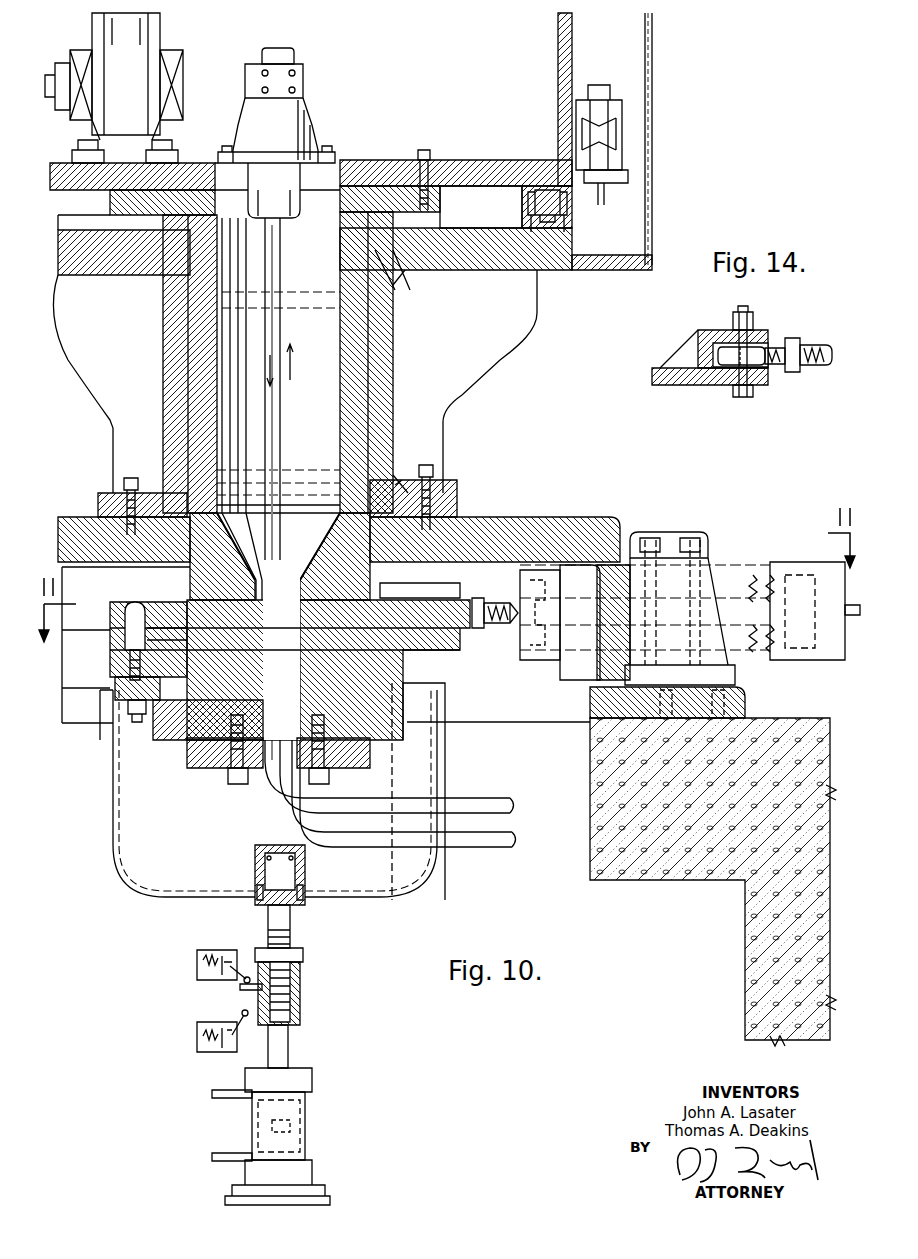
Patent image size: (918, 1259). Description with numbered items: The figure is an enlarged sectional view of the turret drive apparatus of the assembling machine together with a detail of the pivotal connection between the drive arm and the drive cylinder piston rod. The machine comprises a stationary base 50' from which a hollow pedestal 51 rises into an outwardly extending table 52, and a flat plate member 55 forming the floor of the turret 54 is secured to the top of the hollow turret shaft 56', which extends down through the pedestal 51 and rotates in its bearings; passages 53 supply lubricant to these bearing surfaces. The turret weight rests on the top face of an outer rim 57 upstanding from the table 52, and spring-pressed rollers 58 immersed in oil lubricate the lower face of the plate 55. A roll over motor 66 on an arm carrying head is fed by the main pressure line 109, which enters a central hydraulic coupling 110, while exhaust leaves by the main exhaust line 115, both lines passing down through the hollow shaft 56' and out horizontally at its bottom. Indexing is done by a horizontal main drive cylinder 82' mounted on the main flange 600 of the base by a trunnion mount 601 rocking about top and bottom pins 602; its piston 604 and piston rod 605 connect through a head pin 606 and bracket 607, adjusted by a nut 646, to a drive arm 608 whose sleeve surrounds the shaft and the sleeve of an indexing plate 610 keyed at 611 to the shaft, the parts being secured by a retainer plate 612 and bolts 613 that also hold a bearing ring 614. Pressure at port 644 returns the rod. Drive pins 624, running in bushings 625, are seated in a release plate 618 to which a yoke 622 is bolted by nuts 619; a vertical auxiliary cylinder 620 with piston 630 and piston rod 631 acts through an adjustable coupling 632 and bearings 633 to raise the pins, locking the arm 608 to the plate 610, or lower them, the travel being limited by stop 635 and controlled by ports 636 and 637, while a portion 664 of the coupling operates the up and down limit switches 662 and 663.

In FIG. 10, the roll over motor 66 is at (136, 93).
In FIG. 10, the central hydraulic coupling 110 is at (305, 102).
In FIG. 10, the flat plate member 55 is at (398, 163).
In FIG. 10, the table 52 is at (443, 270).
In FIG. 10, the turret 54 is at (655, 103).
In FIG. 10, the rollers 58 is at (548, 188).
In FIG. 10, the outer rim 57 is at (525, 205).
In FIG. 10, the hollow turret shaft 56' is at (192, 407).
In FIG. 10, the hollow pedestal 51 is at (394, 360).
In FIG. 10, the passages 53 is at (398, 283).
In FIG. 10, the stationary base 50' is at (339, 513).
In FIG. 10, the main pressure line 109 is at (294, 388).
In FIG. 10, the main exhaust line 115 is at (258, 372).
In FIG. 10, the indexing plate 610 is at (100, 618).
In FIG. 10, the drive arm 608 is at (110, 635).
In FIG. 14, the drive arm 608 is at (652, 378).
In FIG. 10, the drive pins 624 is at (135, 604).
In FIG. 10, the bushings 625 is at (150, 635).
In FIG. 10, the release plate 618 is at (115, 706).
In FIG. 10, the nuts 619 is at (137, 722).
In FIG. 10, the bearing ring 614 is at (200, 742).
In FIG. 10, the key 611 is at (210, 755).
In FIG. 10, the retainer plate 612 is at (338, 770).
In FIG. 10, the bolts 613 is at (238, 784).
In FIG. 10, the nut 646 is at (476, 598).
In FIG. 14, the nut 646 is at (790, 372).
In FIG. 10, the piston rod 605 is at (497, 603).
In FIG. 14, the piston rod 605 is at (812, 344).
In FIG. 10, the main drive cylinder 82' is at (647, 605).
In FIG. 10, the trunnion mount 601 is at (736, 678).
In FIG. 10, the top and bottom pins 602 is at (670, 545).
In FIG. 10, the piston 604 is at (800, 575).
In FIG. 10, the port 644 is at (841, 626).
In FIG. 10, the main flange 600 is at (62, 710).
In FIG. 10, the yoke 622 is at (132, 858).
In FIG. 10, the bearings 633 is at (257, 890).
In FIG. 10, the adjustable coupling 632 is at (302, 975).
In FIG. 10, the piston rod 631 is at (290, 1045).
In FIG. 10, the piston 630 is at (300, 1112).
In FIG. 10, the auxiliary cylinder 620 is at (306, 1133).
In FIG. 10, the stop 635 is at (276, 1139).
In FIG. 10, the port 636 is at (212, 1158).
In FIG. 10, the port 637 is at (212, 1093).
In FIG. 10, the up limit switch 662 is at (197, 966).
In FIG. 10, the down limit switch 663 is at (197, 1040).
In FIG. 10, the portion 664 is at (240, 988).
In FIG. 14, the bracket 607 is at (718, 330).
In FIG. 14, the head pin 606 is at (760, 345).